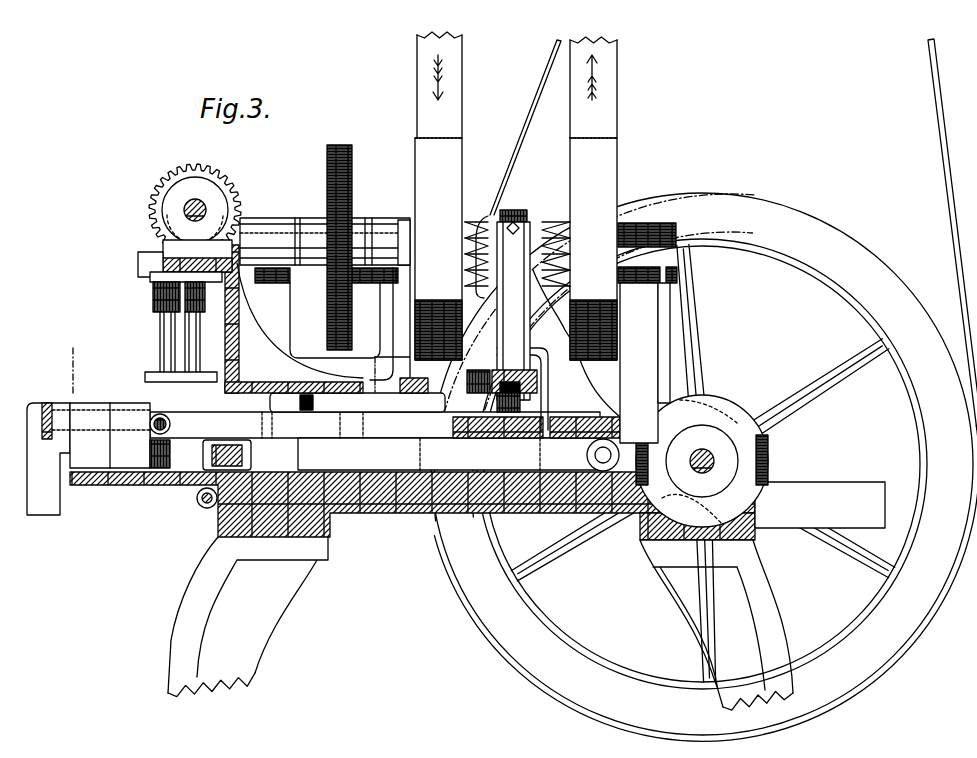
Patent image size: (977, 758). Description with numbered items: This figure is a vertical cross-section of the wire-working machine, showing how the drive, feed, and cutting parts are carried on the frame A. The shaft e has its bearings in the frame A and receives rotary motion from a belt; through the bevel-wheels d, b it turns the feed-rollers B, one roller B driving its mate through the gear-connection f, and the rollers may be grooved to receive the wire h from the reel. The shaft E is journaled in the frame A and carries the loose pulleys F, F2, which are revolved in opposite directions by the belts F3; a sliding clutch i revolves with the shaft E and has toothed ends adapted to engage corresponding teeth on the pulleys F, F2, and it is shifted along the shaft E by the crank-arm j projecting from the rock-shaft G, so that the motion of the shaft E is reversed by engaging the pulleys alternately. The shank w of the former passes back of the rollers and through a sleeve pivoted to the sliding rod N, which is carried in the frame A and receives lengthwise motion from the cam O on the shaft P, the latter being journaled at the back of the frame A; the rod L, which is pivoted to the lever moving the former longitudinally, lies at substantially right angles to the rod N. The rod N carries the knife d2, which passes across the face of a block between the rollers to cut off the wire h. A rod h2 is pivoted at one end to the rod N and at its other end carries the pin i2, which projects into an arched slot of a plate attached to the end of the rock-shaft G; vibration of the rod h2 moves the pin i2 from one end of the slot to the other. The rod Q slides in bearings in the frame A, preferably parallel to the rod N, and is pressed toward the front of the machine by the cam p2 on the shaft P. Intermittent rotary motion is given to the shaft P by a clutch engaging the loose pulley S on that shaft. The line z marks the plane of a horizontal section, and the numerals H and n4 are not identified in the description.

The frame A is at (477, 591).
The loose pulley S is at (704, 390).
The cam O is at (702, 461).
The shaft P is at (702, 461).
The cam p2 is at (718, 460).
The sliding rod N is at (384, 441).
The wire h is at (175, 470).
The rod h2 is at (243, 410).
The knife d2 is at (197, 441).
The shank w is at (227, 443).
The rod L is at (202, 512).
The counter shaft H is at (325, 241).
The shaft E is at (403, 242).
The rod Q is at (340, 247).
The bevel-wheel d is at (195, 200).
The bevel-wheel b is at (185, 248).
The shaft e is at (195, 202).
The gear-connection f is at (177, 297).
The roller B is at (182, 347).
The section line z is at (339, 354).
The loose pulley F is at (438, 249).
The loose pulley F2 is at (623, 290).
The belt F3 is at (528, 85).
The rock-shaft G is at (517, 238).
The crank-arm j is at (513, 311).
The sliding clutch i is at (518, 169).
The block n4 is at (421, 377).
The pin i2 is at (502, 391).